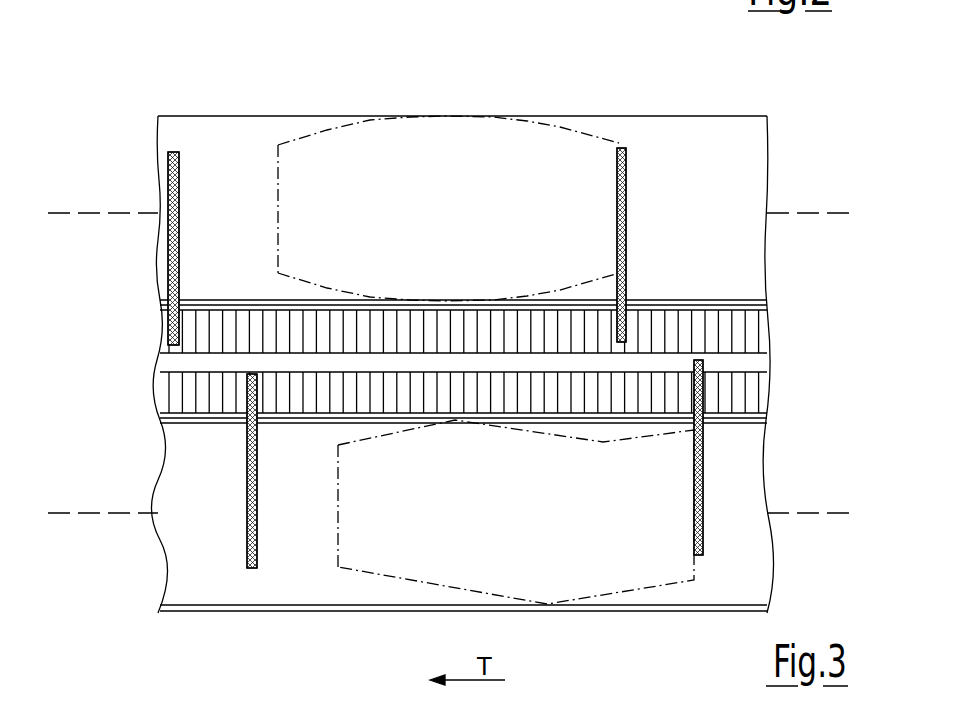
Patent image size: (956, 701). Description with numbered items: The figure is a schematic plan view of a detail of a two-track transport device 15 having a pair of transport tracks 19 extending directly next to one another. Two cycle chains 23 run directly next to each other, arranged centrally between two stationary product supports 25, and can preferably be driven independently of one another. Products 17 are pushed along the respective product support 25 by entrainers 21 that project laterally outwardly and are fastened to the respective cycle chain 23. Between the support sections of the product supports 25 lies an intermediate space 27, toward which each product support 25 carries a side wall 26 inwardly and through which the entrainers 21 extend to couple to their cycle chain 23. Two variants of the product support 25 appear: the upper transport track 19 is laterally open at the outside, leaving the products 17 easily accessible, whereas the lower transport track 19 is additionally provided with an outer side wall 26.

The transport device 15 is at (127, 78).
The products 17 is at (278, 187).
The transport tracks 19 is at (822, 208).
The entrainers 21 is at (180, 210).
The cycle chains 23 is at (748, 322).
The product supports 25 is at (698, 245).
The side wall 26 is at (204, 300).
The intermediate space 27 is at (173, 362).